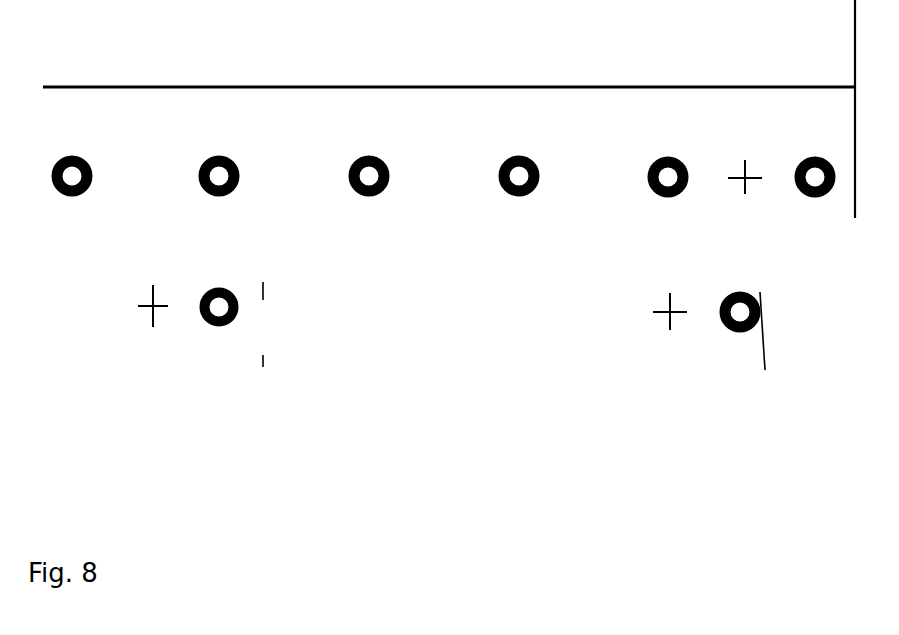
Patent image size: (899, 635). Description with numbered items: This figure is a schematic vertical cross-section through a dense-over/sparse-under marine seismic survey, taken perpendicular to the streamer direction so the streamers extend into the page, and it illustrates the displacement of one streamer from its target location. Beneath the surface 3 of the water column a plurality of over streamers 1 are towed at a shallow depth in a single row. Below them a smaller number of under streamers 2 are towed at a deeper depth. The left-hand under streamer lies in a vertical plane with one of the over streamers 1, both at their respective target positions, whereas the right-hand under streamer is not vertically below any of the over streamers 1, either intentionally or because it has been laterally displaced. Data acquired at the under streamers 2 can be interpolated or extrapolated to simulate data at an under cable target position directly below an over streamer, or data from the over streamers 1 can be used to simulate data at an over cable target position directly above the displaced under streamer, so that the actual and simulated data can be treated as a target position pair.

The over streamers 1 is at (66, 233).
The under streamers 2 is at (96, 330).
The surface 3 is at (82, 72).